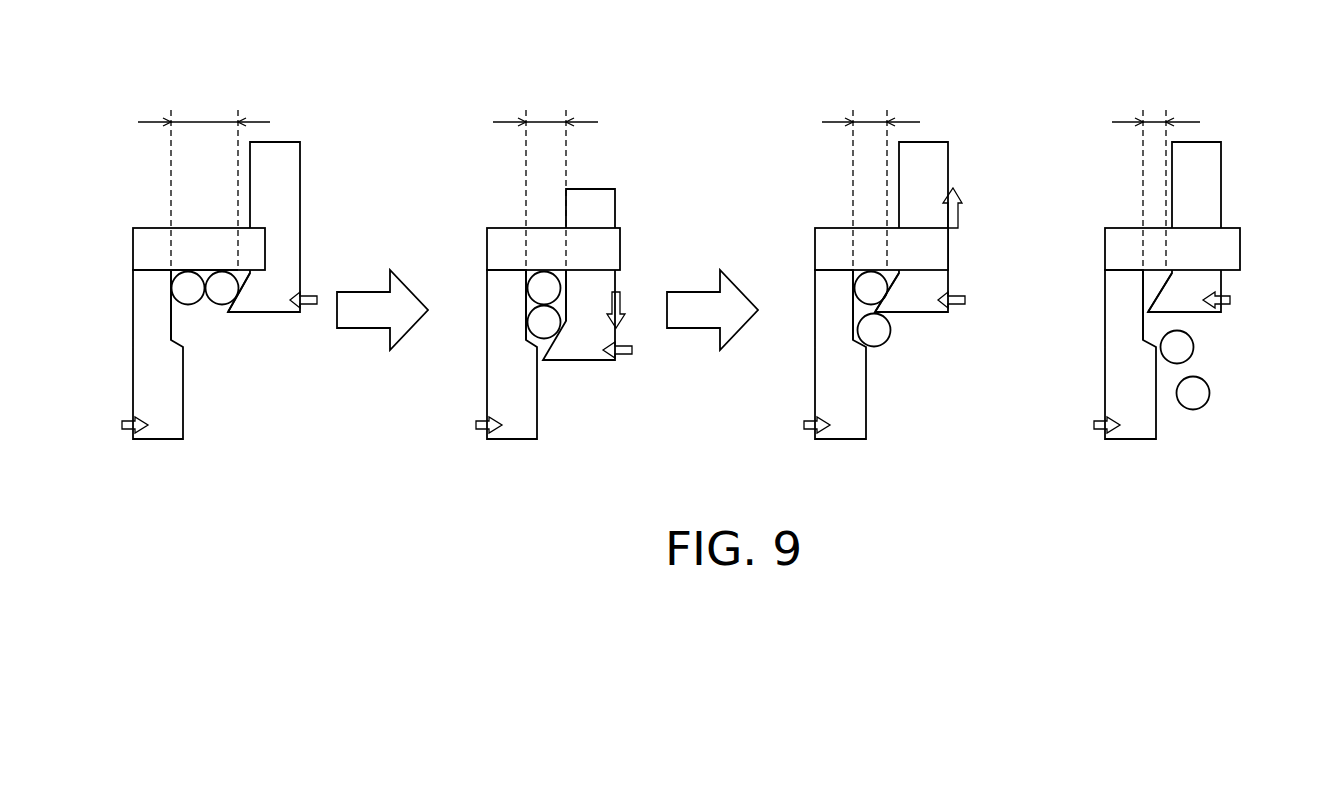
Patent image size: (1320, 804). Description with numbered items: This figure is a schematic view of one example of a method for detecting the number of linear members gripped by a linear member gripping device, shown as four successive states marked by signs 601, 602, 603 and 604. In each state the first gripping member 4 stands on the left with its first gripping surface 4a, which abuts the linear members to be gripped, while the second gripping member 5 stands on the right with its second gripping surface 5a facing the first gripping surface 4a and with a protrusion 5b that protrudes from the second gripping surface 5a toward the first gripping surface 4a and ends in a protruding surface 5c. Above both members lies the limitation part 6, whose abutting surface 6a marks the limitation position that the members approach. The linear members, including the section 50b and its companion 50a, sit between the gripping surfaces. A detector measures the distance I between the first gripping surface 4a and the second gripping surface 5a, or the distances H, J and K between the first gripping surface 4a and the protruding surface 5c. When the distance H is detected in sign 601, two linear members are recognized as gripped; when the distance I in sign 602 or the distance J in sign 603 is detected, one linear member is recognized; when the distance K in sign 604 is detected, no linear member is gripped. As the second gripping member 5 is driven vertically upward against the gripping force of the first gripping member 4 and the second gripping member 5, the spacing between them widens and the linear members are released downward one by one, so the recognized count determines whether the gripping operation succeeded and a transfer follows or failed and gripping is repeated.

The first gripping member 4 is at (140, 351).
The first gripping surface 4a is at (176, 308).
The second gripping member 5 is at (295, 190).
The second gripping surface 5a is at (562, 278).
The protrusion 5b is at (242, 302).
The protruding surface 5c is at (242, 275).
The limitation part 6 is at (153, 237).
The abutting surface 6a is at (207, 267).
The first ball 50a is at (188, 297).
The linear member section 50b is at (222, 297).
The sign 601 is at (127, 94).
The sign 602 is at (491, 94).
The sign 603 is at (797, 94).
The sign 604 is at (1096, 94).